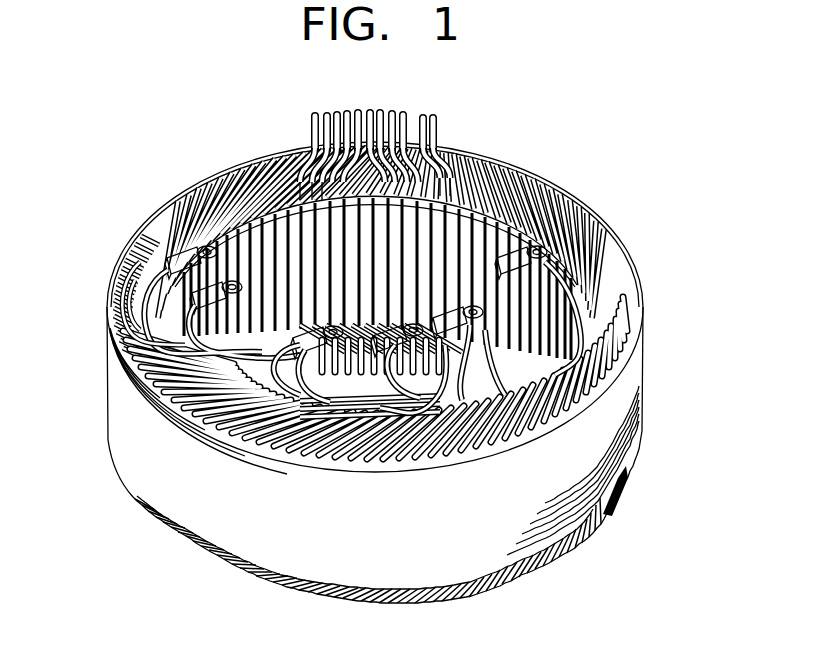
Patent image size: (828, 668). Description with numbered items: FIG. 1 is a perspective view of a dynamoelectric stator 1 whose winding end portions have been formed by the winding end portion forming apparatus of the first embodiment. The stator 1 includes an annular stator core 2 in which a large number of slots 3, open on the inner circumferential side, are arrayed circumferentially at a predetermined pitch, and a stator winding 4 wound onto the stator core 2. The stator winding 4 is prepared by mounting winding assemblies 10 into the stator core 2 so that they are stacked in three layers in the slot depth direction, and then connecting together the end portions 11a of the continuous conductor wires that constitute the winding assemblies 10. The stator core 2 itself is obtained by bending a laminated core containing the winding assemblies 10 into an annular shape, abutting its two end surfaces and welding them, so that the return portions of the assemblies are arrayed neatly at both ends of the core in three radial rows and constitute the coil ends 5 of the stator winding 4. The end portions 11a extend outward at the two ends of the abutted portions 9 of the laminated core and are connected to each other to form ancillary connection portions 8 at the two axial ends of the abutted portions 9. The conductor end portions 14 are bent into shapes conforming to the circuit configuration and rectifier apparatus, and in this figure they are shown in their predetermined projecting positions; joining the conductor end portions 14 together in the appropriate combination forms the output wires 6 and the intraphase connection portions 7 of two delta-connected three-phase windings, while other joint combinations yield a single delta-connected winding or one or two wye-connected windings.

The stator 1 is at (80, 99).
The stator core 2 is at (643, 354).
The slots 3 is at (628, 340).
The stator winding 4 is at (590, 190).
The coil ends 5 is at (152, 215).
The output wires 6 is at (565, 238).
The intraphase connection portions 7 is at (558, 345).
The ancillary connection portions 8 is at (448, 107).
The abutted portions 9 is at (383, 250).
The winding assemblies 10 is at (519, 161).
The end portions of continuous conductor wires 11a is at (322, 138).
The conductor end portions 14 is at (295, 350).